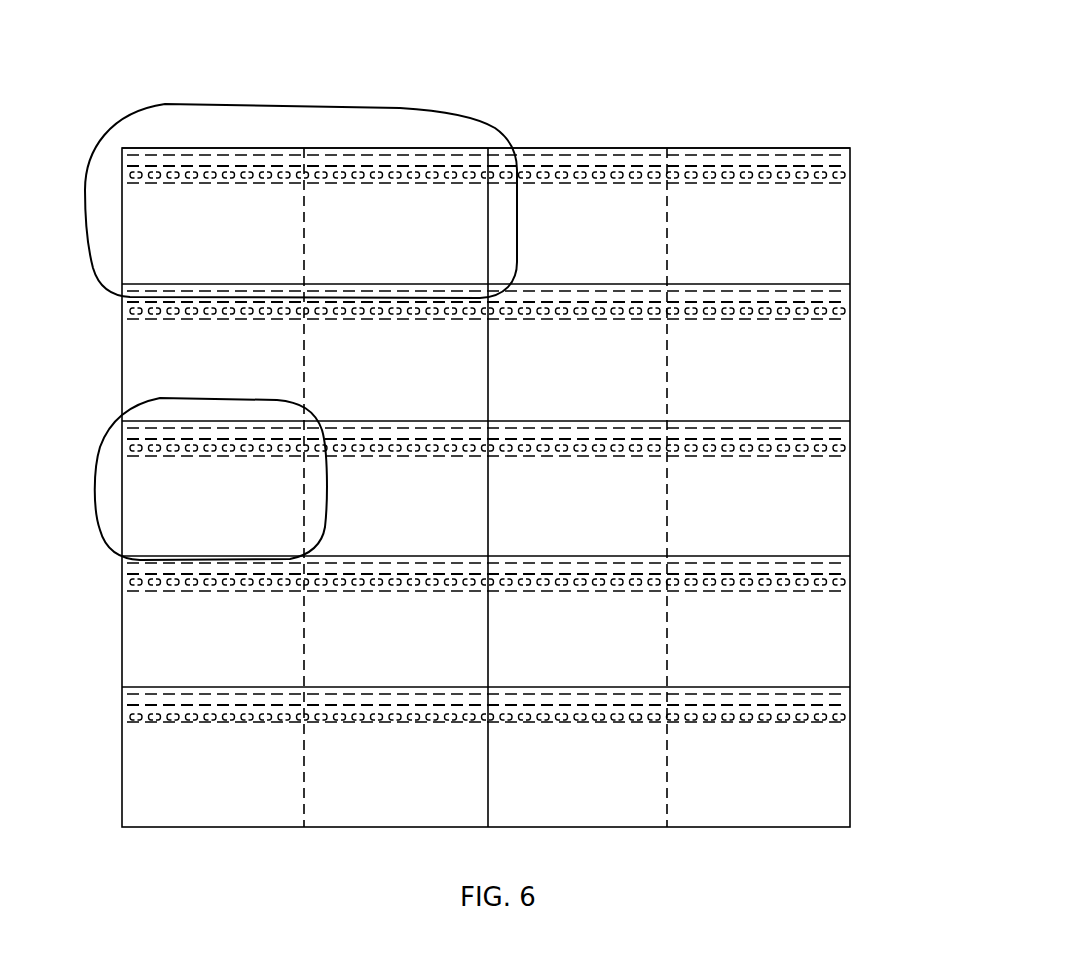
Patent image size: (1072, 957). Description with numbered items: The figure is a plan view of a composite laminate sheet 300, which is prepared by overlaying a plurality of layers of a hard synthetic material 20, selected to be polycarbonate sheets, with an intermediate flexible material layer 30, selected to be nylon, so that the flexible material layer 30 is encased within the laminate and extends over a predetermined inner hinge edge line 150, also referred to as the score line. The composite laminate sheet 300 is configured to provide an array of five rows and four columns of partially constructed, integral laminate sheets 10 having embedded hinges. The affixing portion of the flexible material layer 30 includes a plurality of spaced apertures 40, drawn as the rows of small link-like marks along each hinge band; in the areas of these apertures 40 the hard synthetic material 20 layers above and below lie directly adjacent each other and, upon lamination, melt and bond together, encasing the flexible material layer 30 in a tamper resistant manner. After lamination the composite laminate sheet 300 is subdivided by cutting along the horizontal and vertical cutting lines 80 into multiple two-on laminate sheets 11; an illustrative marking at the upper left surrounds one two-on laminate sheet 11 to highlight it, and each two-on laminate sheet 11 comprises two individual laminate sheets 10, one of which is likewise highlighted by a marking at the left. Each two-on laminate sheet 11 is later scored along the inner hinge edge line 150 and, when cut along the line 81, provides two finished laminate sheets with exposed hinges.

The laminate sheet 10 is at (55, 471).
The two-on laminate sheet 11 is at (392, 108).
The hard synthetic material 20 is at (828, 768).
The flexible material layer 30 is at (832, 702).
The apertures 40 is at (192, 725).
The cutting lines 80 is at (770, 284).
The line 81 is at (303, 197).
The inner hinge edge line 150 is at (633, 165).
The composite laminate sheet 300 is at (905, 457).